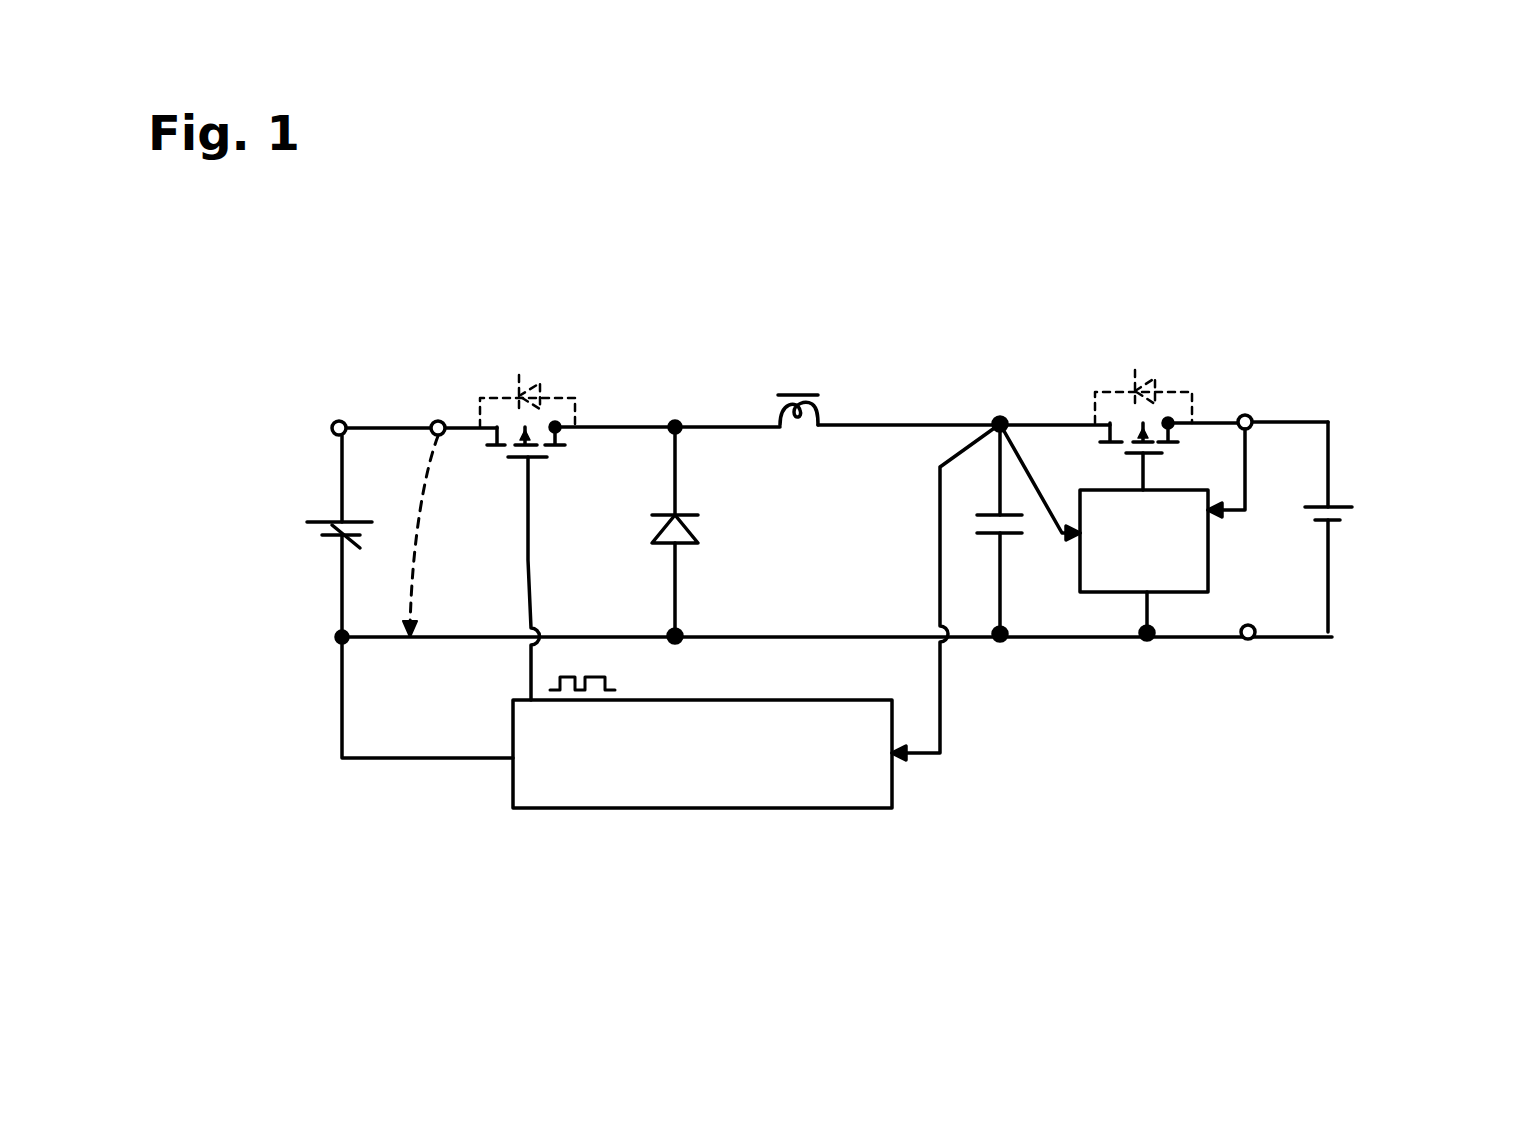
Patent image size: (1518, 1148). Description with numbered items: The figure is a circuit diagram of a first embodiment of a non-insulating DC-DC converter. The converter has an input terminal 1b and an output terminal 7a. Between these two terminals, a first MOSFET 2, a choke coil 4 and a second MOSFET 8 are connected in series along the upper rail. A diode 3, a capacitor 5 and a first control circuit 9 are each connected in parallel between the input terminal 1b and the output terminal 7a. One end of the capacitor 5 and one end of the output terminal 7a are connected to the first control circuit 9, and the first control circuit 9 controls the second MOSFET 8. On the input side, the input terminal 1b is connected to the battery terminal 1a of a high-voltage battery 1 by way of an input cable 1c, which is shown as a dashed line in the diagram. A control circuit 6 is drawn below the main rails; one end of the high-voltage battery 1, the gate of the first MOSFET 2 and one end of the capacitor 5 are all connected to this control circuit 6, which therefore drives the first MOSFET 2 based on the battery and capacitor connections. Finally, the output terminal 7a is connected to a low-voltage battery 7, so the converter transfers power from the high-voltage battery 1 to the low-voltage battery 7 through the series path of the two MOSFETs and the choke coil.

The high-voltage battery 1 is at (315, 522).
The battery terminal 1a is at (333, 423).
The input terminal 1b is at (447, 417).
The input cable 1c is at (380, 427).
The first MOSFET 2 is at (548, 373).
The diode 3 is at (705, 527).
The choke coil 4 is at (800, 387).
The capacitor 5 is at (1012, 547).
The control circuit 6 is at (762, 808).
The low-voltage battery 7 is at (1353, 498).
The output terminal 7a is at (1247, 413).
The second MOSFET 8 is at (1148, 360).
The first control circuit 9 is at (1210, 565).